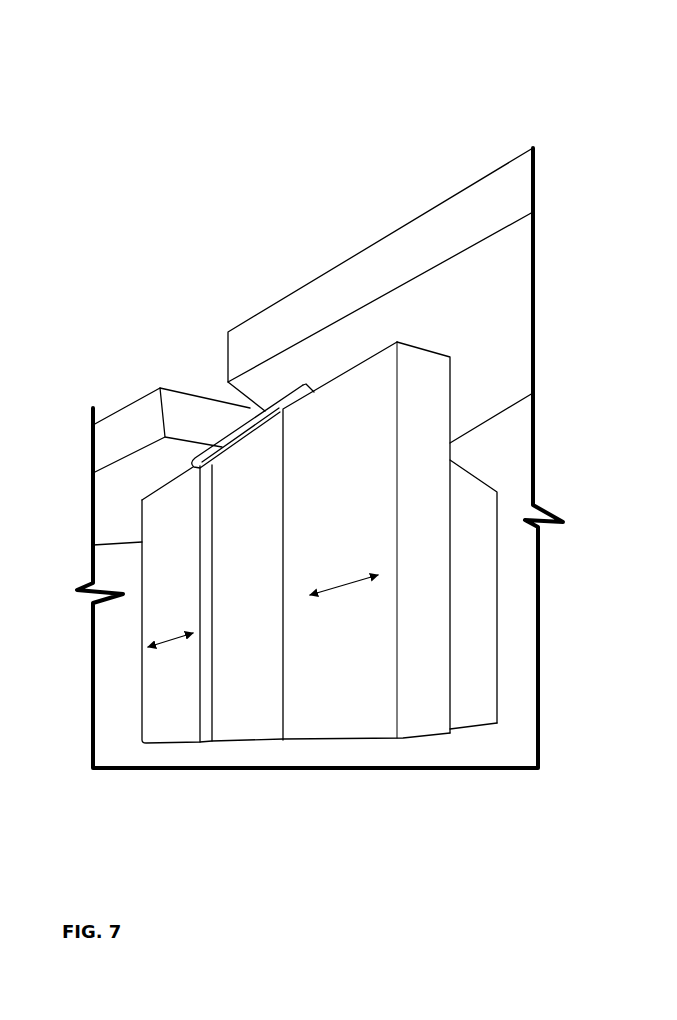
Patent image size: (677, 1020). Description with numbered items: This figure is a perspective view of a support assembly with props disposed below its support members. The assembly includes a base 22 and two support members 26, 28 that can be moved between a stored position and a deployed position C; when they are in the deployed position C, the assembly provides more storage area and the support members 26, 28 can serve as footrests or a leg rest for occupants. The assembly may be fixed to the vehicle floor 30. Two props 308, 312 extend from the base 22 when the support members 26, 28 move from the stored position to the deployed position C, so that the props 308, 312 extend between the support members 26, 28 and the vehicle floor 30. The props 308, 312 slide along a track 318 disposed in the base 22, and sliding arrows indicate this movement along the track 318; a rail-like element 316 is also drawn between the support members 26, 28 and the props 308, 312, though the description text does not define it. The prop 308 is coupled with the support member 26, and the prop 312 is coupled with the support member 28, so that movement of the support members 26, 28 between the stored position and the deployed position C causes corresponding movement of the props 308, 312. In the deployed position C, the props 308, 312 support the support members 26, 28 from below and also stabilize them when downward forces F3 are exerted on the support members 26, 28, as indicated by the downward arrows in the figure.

The base 22 is at (475, 648).
The support member 26 is at (130, 418).
The support member 28 is at (393, 257).
The vehicle floor 30 is at (342, 750).
The prop 308 is at (167, 480).
The prop 312 is at (423, 343).
The guide rail 316 is at (262, 412).
The track 318 is at (172, 645).
The downward forces F3 is at (427, 172).
The deployed position C is at (464, 179).